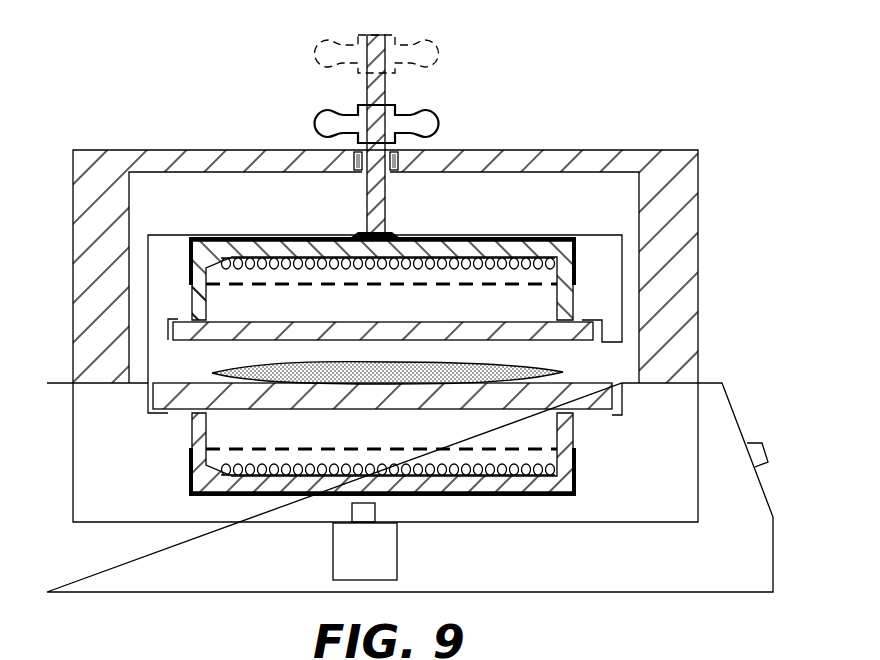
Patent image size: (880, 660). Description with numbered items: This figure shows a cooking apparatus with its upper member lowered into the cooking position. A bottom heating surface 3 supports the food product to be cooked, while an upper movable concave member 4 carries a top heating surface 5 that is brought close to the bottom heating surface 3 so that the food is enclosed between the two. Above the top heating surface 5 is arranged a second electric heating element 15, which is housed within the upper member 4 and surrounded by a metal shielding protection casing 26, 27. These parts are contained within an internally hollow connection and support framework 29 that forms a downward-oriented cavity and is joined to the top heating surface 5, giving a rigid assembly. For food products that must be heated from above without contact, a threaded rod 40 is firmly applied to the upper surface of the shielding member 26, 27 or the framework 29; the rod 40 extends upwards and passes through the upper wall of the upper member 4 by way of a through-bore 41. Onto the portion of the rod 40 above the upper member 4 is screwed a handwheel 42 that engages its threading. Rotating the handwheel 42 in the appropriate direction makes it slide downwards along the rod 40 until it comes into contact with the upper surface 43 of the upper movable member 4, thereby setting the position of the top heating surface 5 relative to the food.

The upper surface 43 is at (394, 272).
The upper member 4 is at (670, 170).
The through-bore 41 is at (408, 156).
The threaded rod 40 is at (398, 97).
The handwheel 42 is at (320, 120).
The connection and support framework 29 is at (592, 226).
The metal shielding protection casing 26 is at (358, 294).
The second electric heating element 15 is at (228, 276).
The metal shielding protection casing 27 is at (176, 286).
The top heating surface 5 is at (541, 336).
The bottom heating surface 3 is at (592, 406).